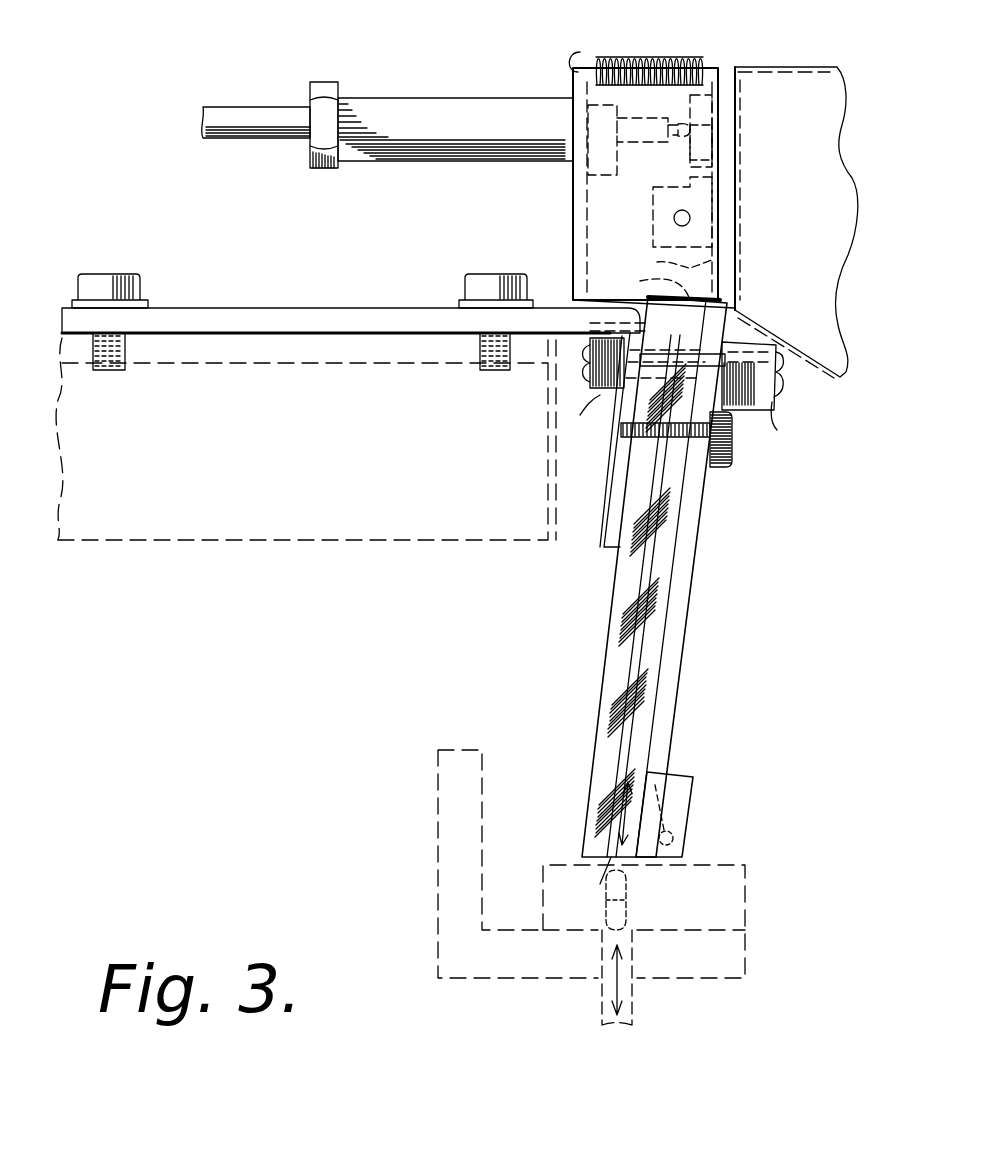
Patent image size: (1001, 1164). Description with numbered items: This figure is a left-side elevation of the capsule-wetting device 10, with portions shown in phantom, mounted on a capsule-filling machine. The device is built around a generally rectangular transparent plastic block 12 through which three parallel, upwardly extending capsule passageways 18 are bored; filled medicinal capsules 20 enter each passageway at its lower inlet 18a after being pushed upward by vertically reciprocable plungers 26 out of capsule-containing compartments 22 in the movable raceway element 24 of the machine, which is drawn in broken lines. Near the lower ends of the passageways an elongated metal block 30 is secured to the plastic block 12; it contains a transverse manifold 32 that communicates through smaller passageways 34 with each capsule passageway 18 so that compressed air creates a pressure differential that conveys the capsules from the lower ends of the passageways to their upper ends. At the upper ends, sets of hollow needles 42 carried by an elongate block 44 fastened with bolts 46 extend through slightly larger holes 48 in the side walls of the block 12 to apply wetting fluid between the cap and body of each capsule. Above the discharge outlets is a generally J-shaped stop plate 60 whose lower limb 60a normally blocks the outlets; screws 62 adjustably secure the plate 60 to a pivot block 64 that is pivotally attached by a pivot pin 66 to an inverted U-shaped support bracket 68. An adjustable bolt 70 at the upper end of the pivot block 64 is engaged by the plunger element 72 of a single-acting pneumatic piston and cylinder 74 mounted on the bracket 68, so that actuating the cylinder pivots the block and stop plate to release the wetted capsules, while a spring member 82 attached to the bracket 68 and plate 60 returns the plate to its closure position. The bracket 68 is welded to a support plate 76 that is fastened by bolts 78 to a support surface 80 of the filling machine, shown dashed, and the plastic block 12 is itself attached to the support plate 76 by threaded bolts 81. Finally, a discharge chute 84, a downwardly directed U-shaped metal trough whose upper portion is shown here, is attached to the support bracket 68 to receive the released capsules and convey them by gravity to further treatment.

The capsule-wetting device 10 is at (760, 546).
The transparent plastic block 12 is at (678, 672).
The capsule passageway 18 is at (672, 618).
The lower inlet 18a is at (600, 884).
The filled medicinal capsule 20 is at (628, 893).
The capsule-containing compartment 22 is at (632, 918).
The raceway element 24 is at (745, 895).
The plunger 26 is at (633, 1004).
The metal block 30 is at (690, 800).
The manifold 32 is at (690, 832).
The smaller passageway 34 is at (688, 770).
The hollow needle 42 is at (665, 380).
The elongate block 44 is at (678, 419).
The bolt 46 is at (585, 375).
The hole 48 is at (682, 367).
The J-shaped plate 60 is at (671, 263).
The lower limb 60a is at (646, 283).
The screw 62 is at (722, 152).
The pivot block 64 is at (652, 205).
The pivot pin 66 is at (674, 220).
The support bracket 68 is at (582, 202).
The adjustable bolt 70 is at (678, 142).
The plunger element 72 is at (655, 121).
The pneumatic piston and cylinder 74 is at (405, 102).
The support plate 76 is at (268, 310).
The bolt 78 is at (130, 272).
The support surface 80 is at (307, 525).
The threaded bolt 81 is at (735, 462).
The spring member 82 is at (637, 62).
The discharge chute 84 is at (812, 182).